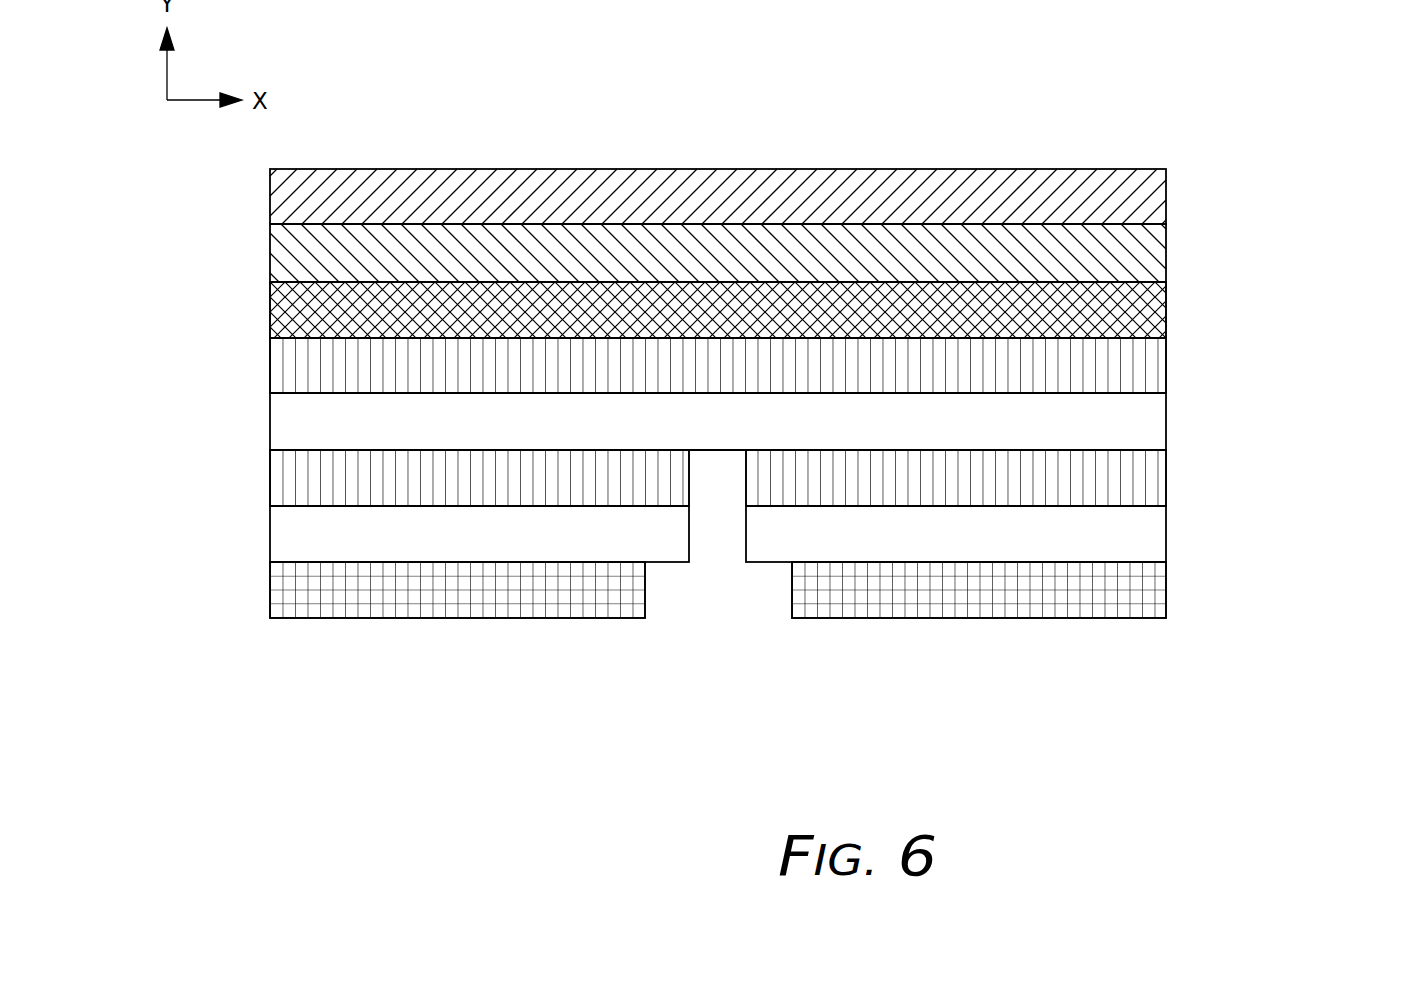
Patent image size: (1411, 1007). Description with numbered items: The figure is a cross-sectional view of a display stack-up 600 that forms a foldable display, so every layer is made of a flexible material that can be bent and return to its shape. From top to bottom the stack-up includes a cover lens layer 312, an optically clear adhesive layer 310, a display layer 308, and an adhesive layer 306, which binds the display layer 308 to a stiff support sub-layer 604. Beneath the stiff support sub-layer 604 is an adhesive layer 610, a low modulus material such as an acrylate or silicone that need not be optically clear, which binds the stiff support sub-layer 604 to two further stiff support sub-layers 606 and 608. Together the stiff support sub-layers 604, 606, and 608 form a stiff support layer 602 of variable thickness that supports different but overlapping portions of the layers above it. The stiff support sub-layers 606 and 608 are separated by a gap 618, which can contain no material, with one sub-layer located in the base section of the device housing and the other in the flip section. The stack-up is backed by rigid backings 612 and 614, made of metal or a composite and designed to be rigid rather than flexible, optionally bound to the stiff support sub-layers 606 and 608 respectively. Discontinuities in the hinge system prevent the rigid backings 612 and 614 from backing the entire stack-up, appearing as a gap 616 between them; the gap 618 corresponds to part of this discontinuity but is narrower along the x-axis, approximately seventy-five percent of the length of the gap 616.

The cover lens layer 312 is at (1168, 196).
The optically clear adhesive layer 310 is at (1168, 250).
The display layer 308 is at (1168, 317).
The adhesive layer 306 is at (1168, 372).
The stiff support sub-layer 604 is at (1168, 420).
The adhesive layer 610 is at (1168, 482).
The stiff support sub-layer 608 is at (1168, 537).
The stiff support sub-layer 606 is at (268, 550).
The rigid backing 612 is at (399, 620).
The rigid backing 614 is at (1168, 609).
The display stack-up 600 is at (718, 394).
The stiff support layer 602 is at (708, 498).
The gap 616 is at (793, 650).
The gap 618 is at (746, 566).